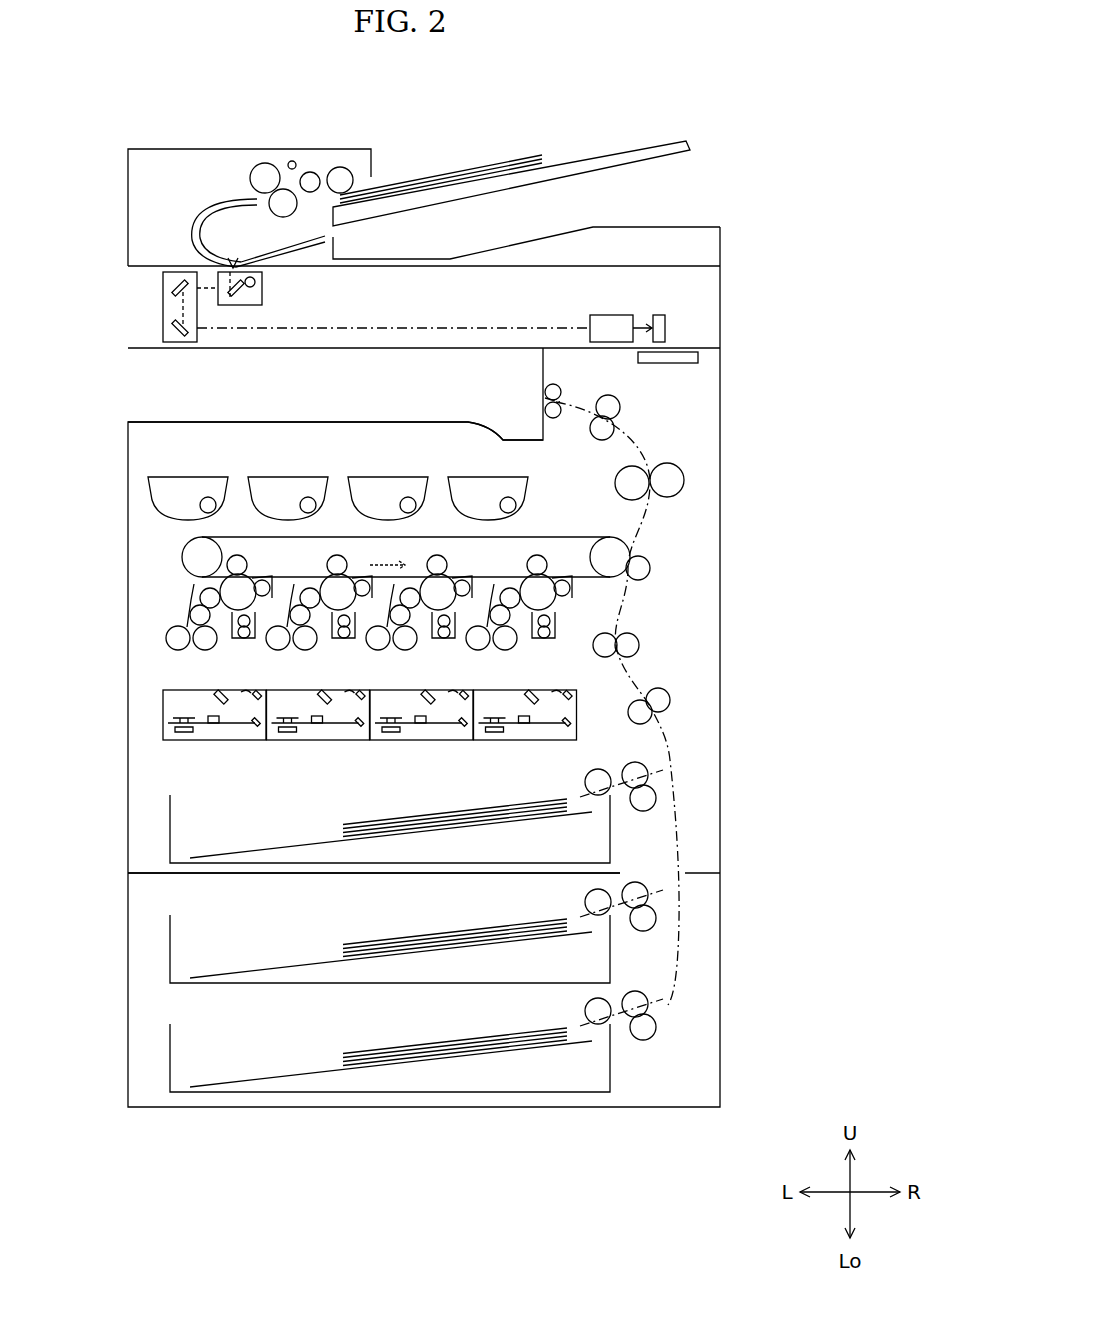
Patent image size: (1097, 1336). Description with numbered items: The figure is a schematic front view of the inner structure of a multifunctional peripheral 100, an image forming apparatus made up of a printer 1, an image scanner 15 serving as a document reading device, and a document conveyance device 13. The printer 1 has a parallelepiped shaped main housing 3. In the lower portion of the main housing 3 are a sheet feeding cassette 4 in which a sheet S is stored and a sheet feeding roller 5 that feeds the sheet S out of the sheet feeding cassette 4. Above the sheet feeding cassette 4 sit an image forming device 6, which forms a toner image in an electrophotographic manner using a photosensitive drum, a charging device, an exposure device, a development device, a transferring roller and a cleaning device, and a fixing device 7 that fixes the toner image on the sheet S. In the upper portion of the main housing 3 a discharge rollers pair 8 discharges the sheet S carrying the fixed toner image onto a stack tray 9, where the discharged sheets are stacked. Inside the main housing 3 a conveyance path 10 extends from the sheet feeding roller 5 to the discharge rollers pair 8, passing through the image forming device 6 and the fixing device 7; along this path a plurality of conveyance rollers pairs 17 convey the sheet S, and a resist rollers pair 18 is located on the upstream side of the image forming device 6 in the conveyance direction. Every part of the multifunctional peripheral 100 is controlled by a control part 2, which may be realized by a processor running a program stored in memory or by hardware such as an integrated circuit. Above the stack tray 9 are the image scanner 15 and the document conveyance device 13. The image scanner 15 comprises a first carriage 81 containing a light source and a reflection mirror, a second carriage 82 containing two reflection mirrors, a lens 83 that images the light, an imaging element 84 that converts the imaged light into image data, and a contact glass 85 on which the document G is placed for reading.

The multifunctional peripheral 100 is at (840, 118).
The document conveyance device 13 is at (733, 213).
The document G is at (430, 181).
The contact glass 85 is at (408, 268).
The image scanner 15 is at (735, 310).
The second carriage 82 is at (163, 288).
The first carriage 81 is at (262, 286).
The lens 83 is at (612, 315).
The imaging element 84 is at (660, 315).
The printer 1 is at (733, 387).
The main housing 3 is at (722, 508).
The stack tray 9 is at (297, 420).
The control part 2 is at (688, 365).
The discharge rollers pair 8 is at (561, 392).
The conveyance rollers pairs 17 is at (620, 405).
The fixing device 7 is at (662, 505).
The image forming device 6 is at (553, 520).
The resist rollers pair 18 is at (640, 640).
The conveyance path 10 is at (683, 905).
The sheet feeding cassette 4 is at (612, 847).
The sheet feeding roller 5 is at (585, 782).
The sheet S is at (360, 828).